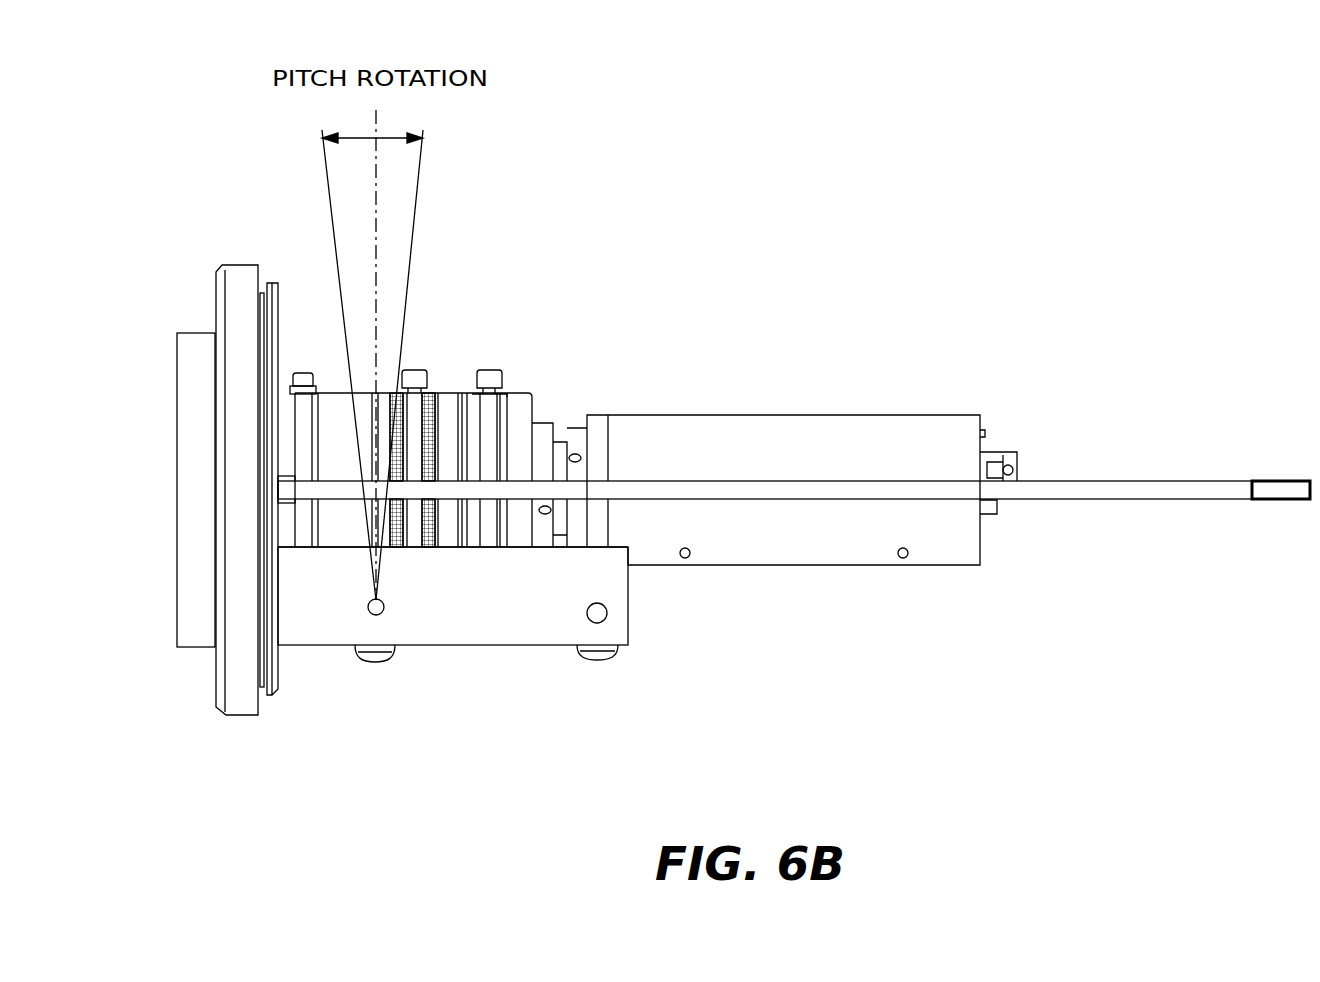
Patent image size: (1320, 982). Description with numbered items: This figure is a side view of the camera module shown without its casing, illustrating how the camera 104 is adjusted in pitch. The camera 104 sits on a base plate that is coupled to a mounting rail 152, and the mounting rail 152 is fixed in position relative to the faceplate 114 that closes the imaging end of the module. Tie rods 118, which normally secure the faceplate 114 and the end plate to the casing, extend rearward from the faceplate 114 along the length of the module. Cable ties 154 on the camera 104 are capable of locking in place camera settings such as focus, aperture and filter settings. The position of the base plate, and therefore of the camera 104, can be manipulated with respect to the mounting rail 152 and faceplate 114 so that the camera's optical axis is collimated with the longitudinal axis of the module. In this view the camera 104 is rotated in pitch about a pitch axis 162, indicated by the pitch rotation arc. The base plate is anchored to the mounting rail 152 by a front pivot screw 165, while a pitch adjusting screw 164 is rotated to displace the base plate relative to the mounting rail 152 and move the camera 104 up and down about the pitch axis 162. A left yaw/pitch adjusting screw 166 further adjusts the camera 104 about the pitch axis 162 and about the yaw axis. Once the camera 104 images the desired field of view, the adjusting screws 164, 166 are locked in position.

The camera 104 is at (802, 490).
The faceplate 114 is at (246, 265).
The tie rods 118 is at (1187, 481).
The mounting rail 152 is at (505, 646).
The cable ties 154 is at (491, 372).
The pitch axis 162 is at (368, 607).
The pitch adjusting screw 164 is at (601, 660).
The front pivot screw 165 is at (375, 662).
The left yaw/pitch adjusting screw 166 is at (606, 611).